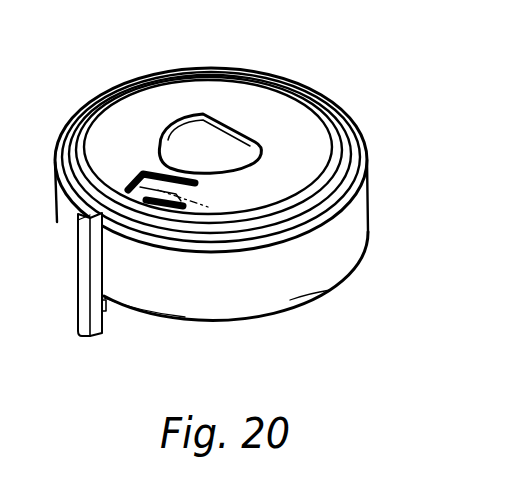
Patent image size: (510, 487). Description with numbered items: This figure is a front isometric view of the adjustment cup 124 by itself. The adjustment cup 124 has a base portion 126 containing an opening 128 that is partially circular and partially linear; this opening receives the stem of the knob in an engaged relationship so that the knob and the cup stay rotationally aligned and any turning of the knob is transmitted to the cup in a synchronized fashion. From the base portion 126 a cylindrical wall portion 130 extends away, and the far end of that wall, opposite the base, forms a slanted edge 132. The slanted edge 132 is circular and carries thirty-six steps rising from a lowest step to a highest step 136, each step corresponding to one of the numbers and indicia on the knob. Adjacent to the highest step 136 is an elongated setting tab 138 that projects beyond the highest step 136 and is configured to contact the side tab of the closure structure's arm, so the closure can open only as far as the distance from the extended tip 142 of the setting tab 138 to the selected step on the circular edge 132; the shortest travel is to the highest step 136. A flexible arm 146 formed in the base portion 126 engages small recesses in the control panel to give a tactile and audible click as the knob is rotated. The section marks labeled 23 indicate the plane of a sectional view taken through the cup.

The section line 23- 23 is at (143, 133).
The adjustment cup 124 is at (350, 105).
The base portion 126 is at (168, 94).
The opening 128 is at (210, 147).
The cylindrical wall portion 130 is at (339, 236).
The slanted edge 132 is at (58, 221).
The highest step 136 is at (120, 312).
The setting tab 138 is at (80, 338).
The extended tip 142 is at (102, 334).
The flexible arm 146 is at (205, 204).